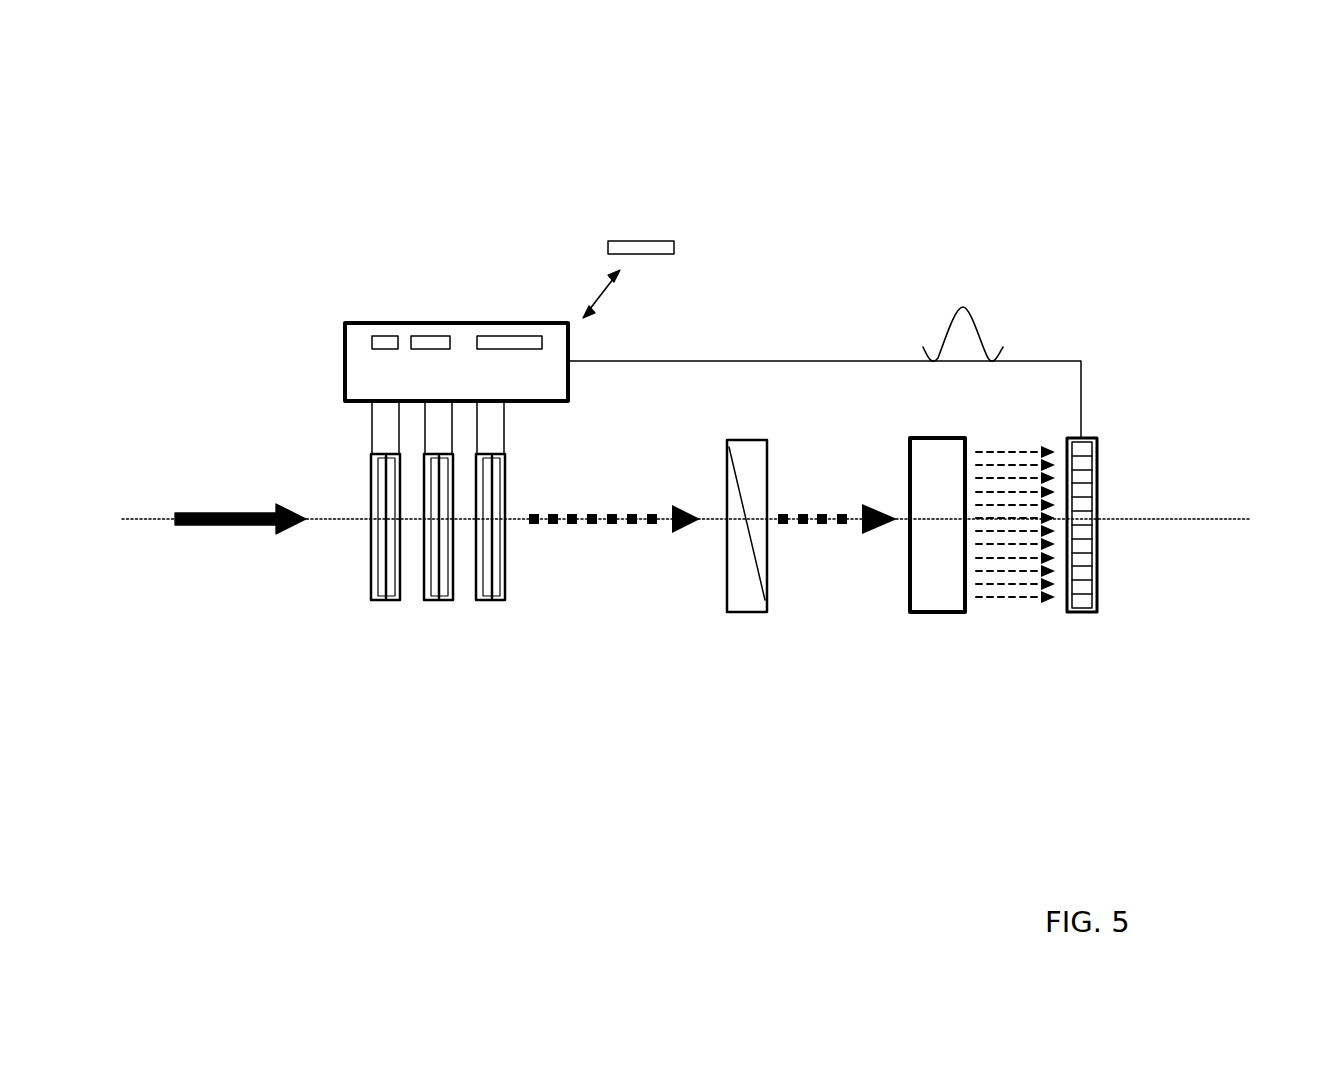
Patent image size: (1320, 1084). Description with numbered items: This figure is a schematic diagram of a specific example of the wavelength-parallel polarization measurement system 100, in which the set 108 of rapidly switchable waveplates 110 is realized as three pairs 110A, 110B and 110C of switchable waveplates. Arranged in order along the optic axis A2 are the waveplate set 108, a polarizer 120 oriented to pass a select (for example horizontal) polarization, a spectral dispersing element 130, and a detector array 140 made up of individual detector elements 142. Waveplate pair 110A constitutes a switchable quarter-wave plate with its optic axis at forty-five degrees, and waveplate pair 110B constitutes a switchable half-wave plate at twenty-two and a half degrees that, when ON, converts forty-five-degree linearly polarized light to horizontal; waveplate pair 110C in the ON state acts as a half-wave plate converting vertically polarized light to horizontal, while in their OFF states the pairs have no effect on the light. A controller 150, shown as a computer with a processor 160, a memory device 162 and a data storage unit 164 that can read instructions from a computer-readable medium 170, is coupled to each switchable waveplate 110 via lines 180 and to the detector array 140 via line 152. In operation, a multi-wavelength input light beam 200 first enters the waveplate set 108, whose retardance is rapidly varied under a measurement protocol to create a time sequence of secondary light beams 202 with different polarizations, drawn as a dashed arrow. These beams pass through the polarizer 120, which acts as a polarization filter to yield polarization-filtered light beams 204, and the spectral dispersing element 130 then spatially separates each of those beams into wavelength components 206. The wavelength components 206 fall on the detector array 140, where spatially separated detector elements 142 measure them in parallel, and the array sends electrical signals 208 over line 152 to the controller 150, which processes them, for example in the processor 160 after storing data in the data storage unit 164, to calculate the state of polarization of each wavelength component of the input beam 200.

The wavelength-parallel polarization measurement system 100 is at (402, 154).
The set of switchable waveplates 108 is at (449, 654).
The switchable waveplate 110 is at (331, 580).
The waveplate pair 110A is at (370, 619).
The waveplate pair 110B is at (442, 633).
The waveplate pair 110C is at (556, 578).
The polarizer 120 is at (740, 613).
The spectral dispersing element 130 is at (935, 612).
The detector array 140 is at (1157, 564).
The detector element 142 is at (1085, 584).
The controller 150 is at (345, 375).
The line 152 is at (872, 361).
The processor 160 is at (385, 336).
The memory device 162 is at (437, 336).
The data storage unit 164 is at (515, 336).
The computer-readable medium 170 is at (648, 241).
The lines 180 is at (372, 428).
The multi-wavelength input light beam 200 is at (242, 525).
The secondary light beams 202 is at (595, 517).
The polarization-filtered light beams 204 is at (843, 517).
The wavelength components 206 is at (1032, 632).
The electrical signals 208 is at (975, 332).
The optic axis A2 is at (1173, 519).